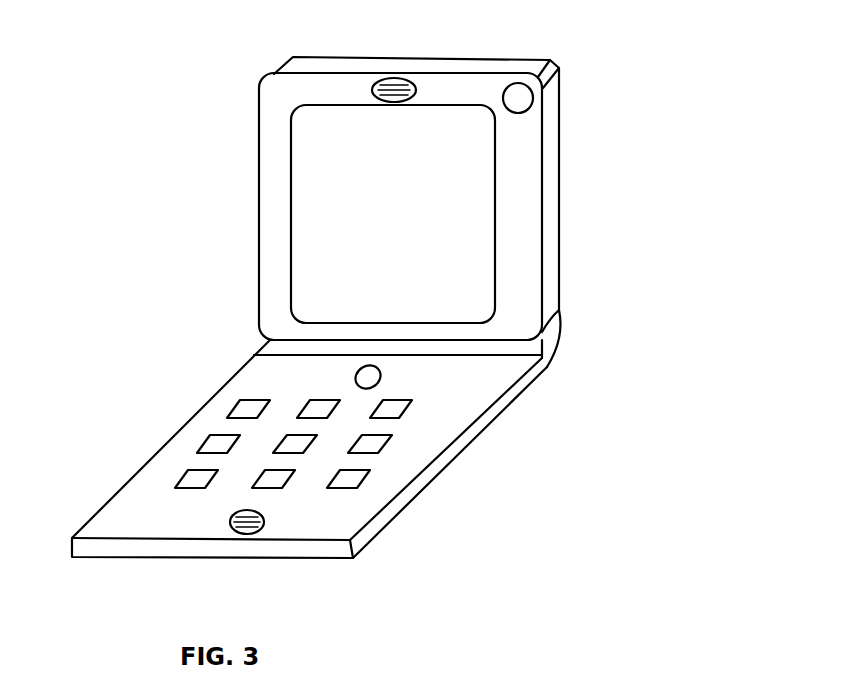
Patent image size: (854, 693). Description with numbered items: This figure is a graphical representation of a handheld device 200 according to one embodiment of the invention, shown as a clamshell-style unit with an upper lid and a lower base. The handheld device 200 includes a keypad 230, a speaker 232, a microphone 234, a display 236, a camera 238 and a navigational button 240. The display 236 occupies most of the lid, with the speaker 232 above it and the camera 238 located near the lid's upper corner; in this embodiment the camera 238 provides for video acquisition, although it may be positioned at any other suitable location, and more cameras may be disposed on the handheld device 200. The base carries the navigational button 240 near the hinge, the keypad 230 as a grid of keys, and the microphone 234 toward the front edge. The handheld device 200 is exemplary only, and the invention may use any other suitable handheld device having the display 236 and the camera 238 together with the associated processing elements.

The handheld device 200 is at (558, 248).
The keypad 230 is at (193, 440).
The speaker 232 is at (371, 90).
The microphone 234 is at (265, 521).
The display 236 is at (292, 213).
The camera 238 is at (518, 82).
The navigational button 240 is at (382, 375).